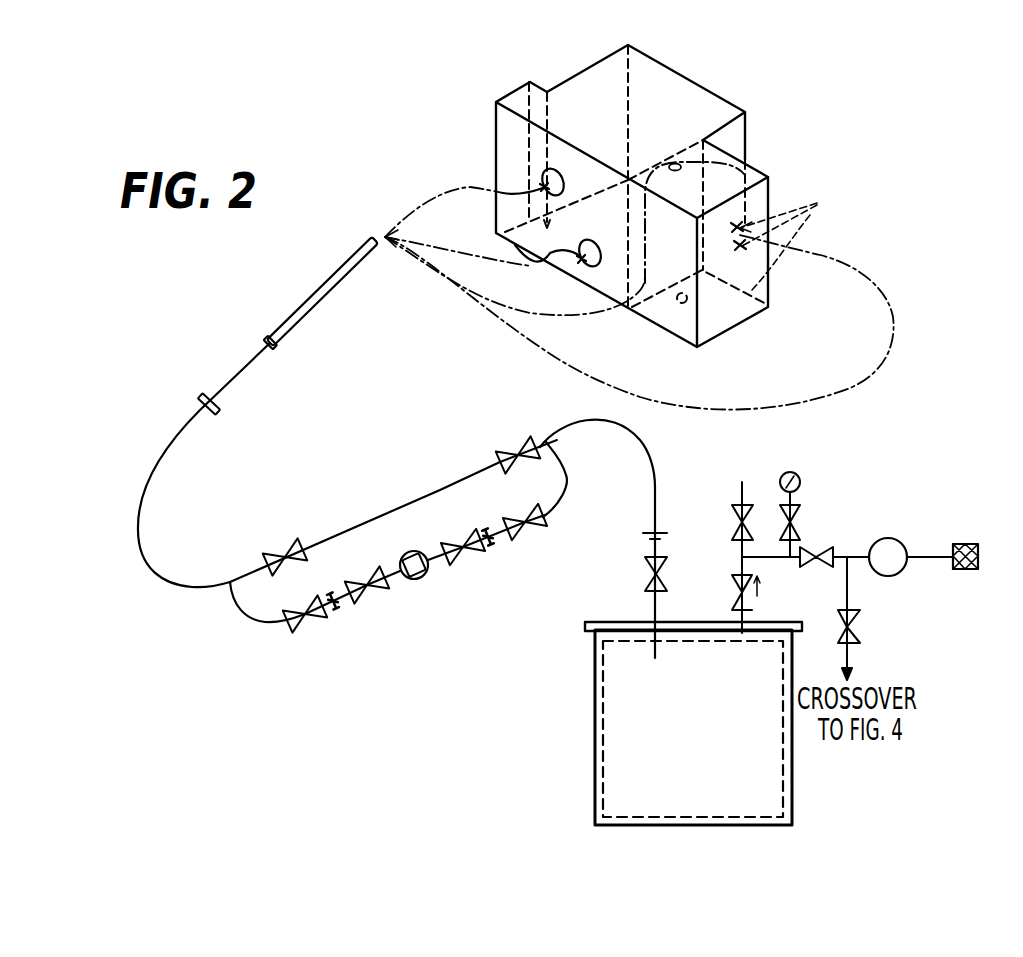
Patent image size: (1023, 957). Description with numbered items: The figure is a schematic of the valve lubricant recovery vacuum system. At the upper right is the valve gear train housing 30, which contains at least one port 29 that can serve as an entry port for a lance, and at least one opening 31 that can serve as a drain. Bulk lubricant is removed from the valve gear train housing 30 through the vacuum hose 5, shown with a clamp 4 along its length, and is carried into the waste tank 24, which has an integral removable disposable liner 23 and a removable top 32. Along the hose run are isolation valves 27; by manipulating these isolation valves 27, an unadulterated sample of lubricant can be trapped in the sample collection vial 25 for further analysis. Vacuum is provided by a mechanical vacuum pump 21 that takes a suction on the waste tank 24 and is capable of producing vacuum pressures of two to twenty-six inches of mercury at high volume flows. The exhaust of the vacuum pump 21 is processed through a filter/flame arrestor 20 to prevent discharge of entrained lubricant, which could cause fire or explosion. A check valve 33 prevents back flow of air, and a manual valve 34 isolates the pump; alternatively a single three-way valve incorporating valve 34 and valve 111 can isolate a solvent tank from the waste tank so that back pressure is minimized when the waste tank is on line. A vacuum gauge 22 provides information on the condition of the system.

The clamp 4 is at (207, 398).
The vacuum hose 5 is at (166, 576).
The filter/flame arrestor 20 is at (978, 571).
The vacuum pump 21 is at (903, 570).
The vacuum gauge 22 is at (801, 481).
The waste tank liner 23 is at (613, 710).
The waste tank 24 is at (592, 648).
The sample collection vial 25 is at (414, 580).
The isolation valves 27 is at (318, 603).
The port 29 is at (515, 245).
The valve gear train housing 30 is at (746, 104).
The opening 31 is at (768, 190).
The removable top 32 is at (609, 620).
The check valve 33 is at (740, 578).
The manual valve 34 is at (834, 554).
The valve 111 is at (859, 633).